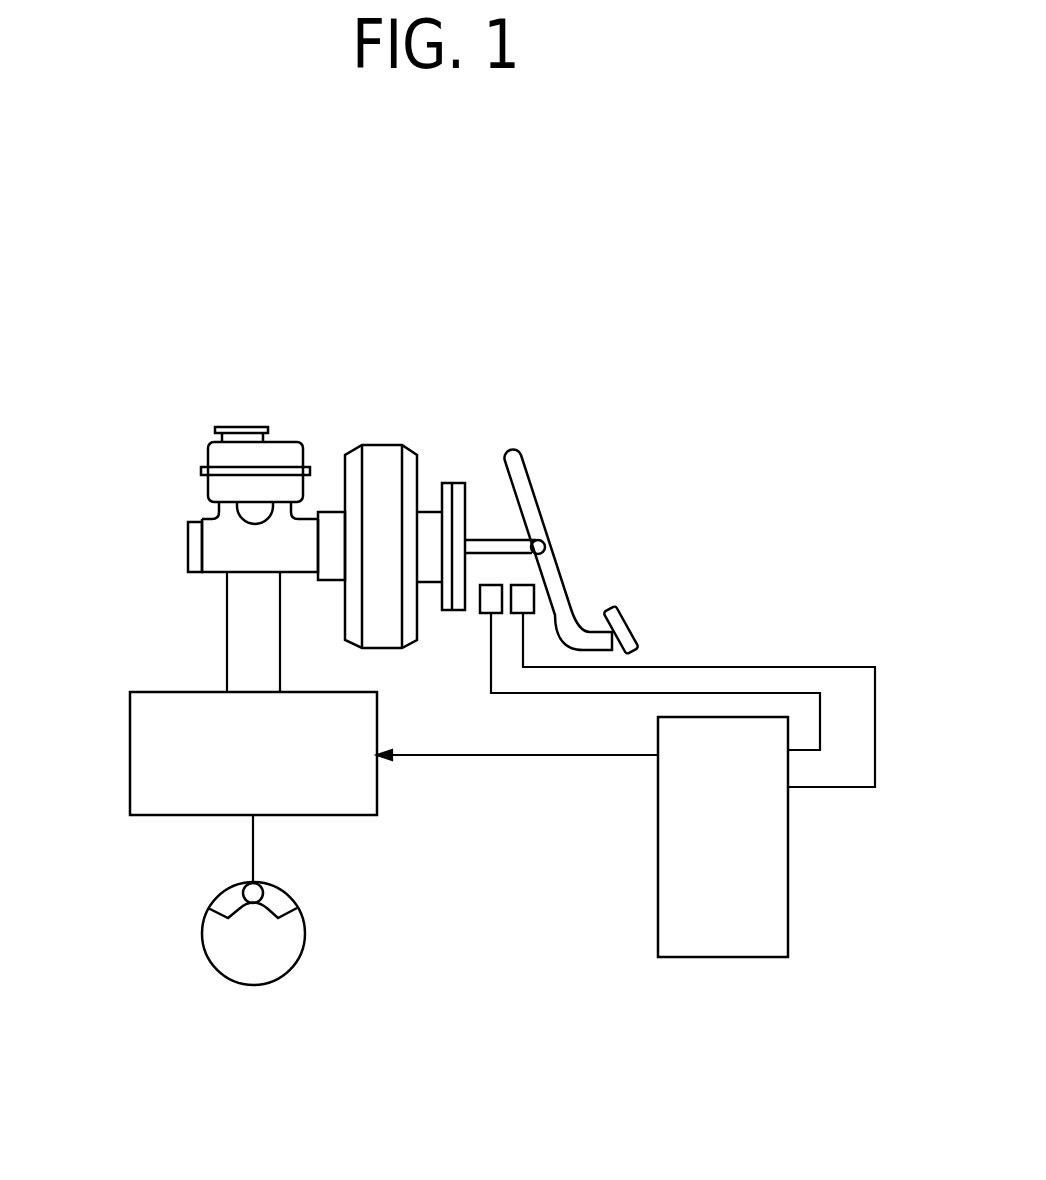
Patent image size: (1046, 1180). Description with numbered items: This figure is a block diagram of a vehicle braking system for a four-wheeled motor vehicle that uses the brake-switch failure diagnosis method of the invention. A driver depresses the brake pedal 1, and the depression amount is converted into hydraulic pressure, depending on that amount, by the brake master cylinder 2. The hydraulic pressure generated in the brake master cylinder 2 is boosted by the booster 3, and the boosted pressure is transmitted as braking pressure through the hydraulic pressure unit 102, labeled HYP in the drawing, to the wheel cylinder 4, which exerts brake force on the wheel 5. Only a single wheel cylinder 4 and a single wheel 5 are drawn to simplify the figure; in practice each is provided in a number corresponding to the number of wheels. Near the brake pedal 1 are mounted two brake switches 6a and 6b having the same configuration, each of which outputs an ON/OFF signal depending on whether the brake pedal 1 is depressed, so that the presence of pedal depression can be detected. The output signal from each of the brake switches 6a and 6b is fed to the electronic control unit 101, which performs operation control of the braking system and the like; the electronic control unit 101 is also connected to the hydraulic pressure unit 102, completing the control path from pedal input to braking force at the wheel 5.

The brake pedal 1 is at (615, 623).
The brake master cylinder 2 is at (378, 458).
The booster 3 is at (213, 538).
The wheel cylinder 4 is at (290, 897).
The wheel 5 is at (225, 947).
The brake switch 6a is at (487, 604).
The brake switch 6b is at (523, 600).
The electronic control unit 101 is at (768, 876).
The hydraulic pressure unit 102 is at (358, 800).